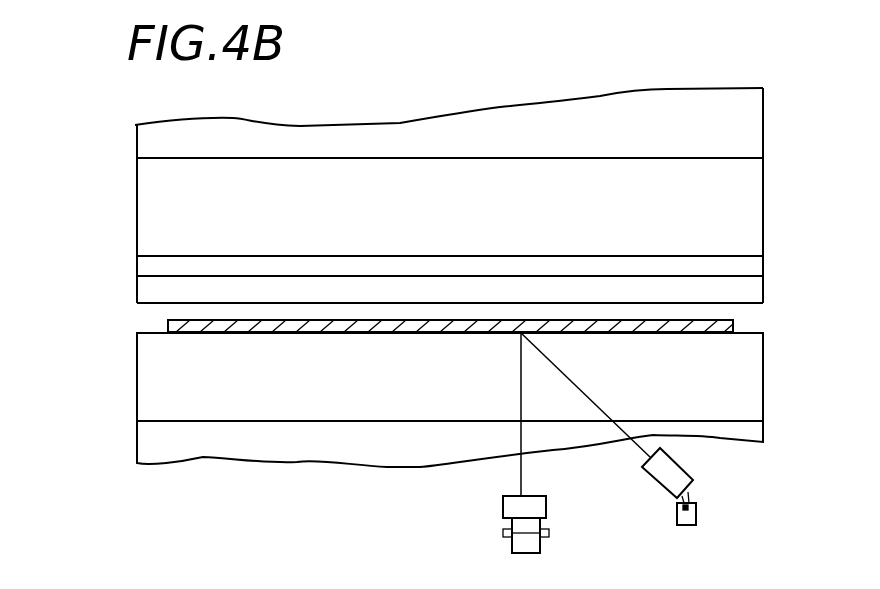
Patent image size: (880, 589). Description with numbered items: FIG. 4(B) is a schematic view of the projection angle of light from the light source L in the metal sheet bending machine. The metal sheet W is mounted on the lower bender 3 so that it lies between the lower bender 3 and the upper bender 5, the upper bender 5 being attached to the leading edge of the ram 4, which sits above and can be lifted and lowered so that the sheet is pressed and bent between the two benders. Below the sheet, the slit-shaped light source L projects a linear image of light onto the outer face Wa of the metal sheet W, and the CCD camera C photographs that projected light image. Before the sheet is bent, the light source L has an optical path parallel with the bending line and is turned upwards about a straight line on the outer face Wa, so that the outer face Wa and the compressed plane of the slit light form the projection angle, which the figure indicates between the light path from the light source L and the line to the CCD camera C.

The lower bender 3 is at (757, 360).
The ram 4 is at (752, 129).
The upper bender 5 is at (748, 212).
The metal sheet W is at (735, 318).
The outer face Wa is at (186, 334).
The CCD camera C is at (540, 507).
The light source L is at (676, 470).